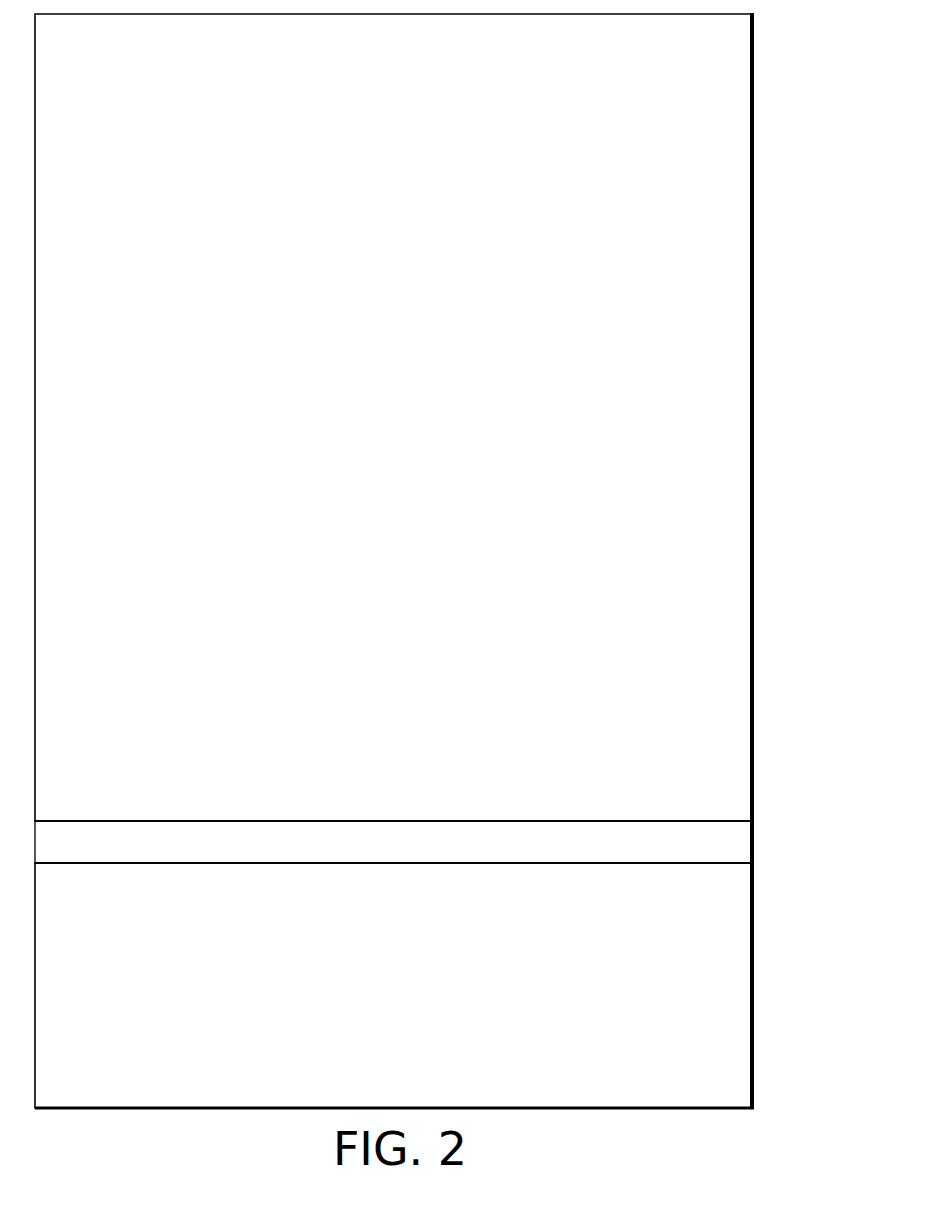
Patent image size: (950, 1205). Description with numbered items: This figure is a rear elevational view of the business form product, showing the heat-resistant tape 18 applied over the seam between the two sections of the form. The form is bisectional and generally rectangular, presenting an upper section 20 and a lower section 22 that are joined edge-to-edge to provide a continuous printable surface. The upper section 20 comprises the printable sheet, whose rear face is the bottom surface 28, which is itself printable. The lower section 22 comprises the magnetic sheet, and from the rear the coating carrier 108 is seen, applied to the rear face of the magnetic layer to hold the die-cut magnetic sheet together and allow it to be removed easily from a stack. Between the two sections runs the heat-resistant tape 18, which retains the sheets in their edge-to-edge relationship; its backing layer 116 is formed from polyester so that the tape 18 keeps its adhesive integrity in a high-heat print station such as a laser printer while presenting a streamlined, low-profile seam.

The bottom surface 28 is at (381, 719).
The backing layer 116 is at (375, 853).
The coating carrier 108 is at (375, 984).
The upper section 20 is at (755, 705).
The heat-resistant tape 18 is at (722, 842).
The lower section 22 is at (755, 963).